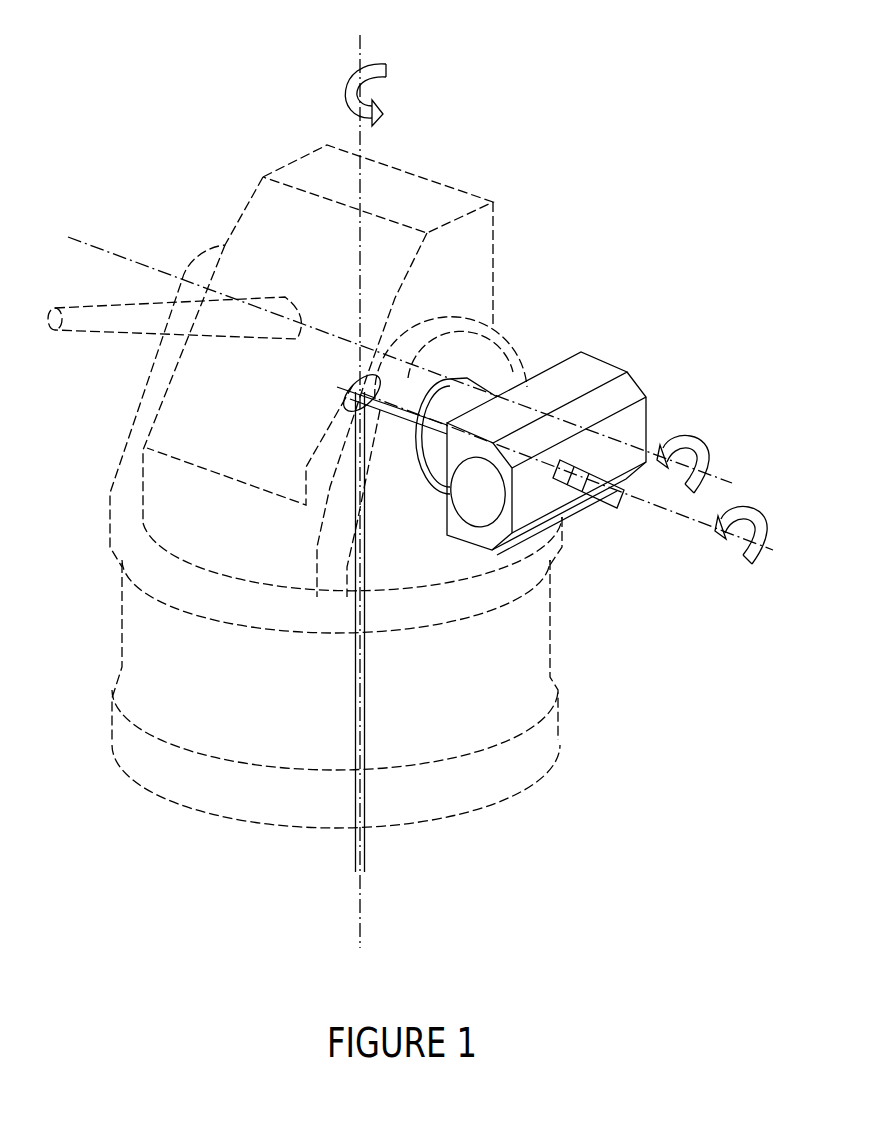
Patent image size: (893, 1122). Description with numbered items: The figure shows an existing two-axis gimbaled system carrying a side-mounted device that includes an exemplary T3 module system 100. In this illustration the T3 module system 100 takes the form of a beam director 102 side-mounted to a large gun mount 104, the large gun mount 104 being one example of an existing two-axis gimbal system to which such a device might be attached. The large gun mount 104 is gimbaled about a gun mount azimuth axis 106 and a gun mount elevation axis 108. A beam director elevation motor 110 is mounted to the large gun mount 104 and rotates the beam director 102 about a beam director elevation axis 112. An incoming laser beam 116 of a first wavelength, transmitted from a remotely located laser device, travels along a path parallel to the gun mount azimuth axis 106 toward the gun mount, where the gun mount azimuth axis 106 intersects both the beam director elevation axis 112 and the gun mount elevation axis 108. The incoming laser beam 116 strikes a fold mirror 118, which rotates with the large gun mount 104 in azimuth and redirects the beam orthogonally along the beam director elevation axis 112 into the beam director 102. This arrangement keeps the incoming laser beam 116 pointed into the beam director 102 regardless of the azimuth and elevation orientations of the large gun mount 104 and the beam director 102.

The T3 module system 100 is at (617, 547).
The beam director 102 is at (620, 364).
The large gun mount 104 is at (124, 668).
The gun mount azimuth axis 106 is at (360, 50).
The gun mount elevation axis 108 is at (716, 478).
The beam director elevation motor 110 is at (488, 378).
The beam director elevation axis 112 is at (688, 520).
The incoming laser beam 116 is at (408, 423).
The fold mirror 118 is at (348, 398).